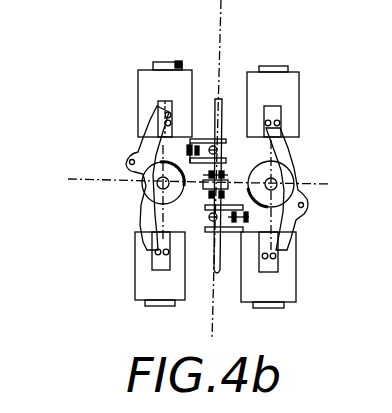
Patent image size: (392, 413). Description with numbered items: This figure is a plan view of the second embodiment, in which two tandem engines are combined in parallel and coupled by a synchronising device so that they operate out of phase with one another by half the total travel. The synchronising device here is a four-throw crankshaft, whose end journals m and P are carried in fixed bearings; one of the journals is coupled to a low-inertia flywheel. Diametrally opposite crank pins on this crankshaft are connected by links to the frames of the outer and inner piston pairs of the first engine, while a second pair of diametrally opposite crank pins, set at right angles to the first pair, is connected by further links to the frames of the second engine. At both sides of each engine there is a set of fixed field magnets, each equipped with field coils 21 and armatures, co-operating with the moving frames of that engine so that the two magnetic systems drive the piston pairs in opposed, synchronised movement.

The field coils 21 is at (180, 65).
The end journal P is at (215, 111).
The end journal m is at (216, 275).